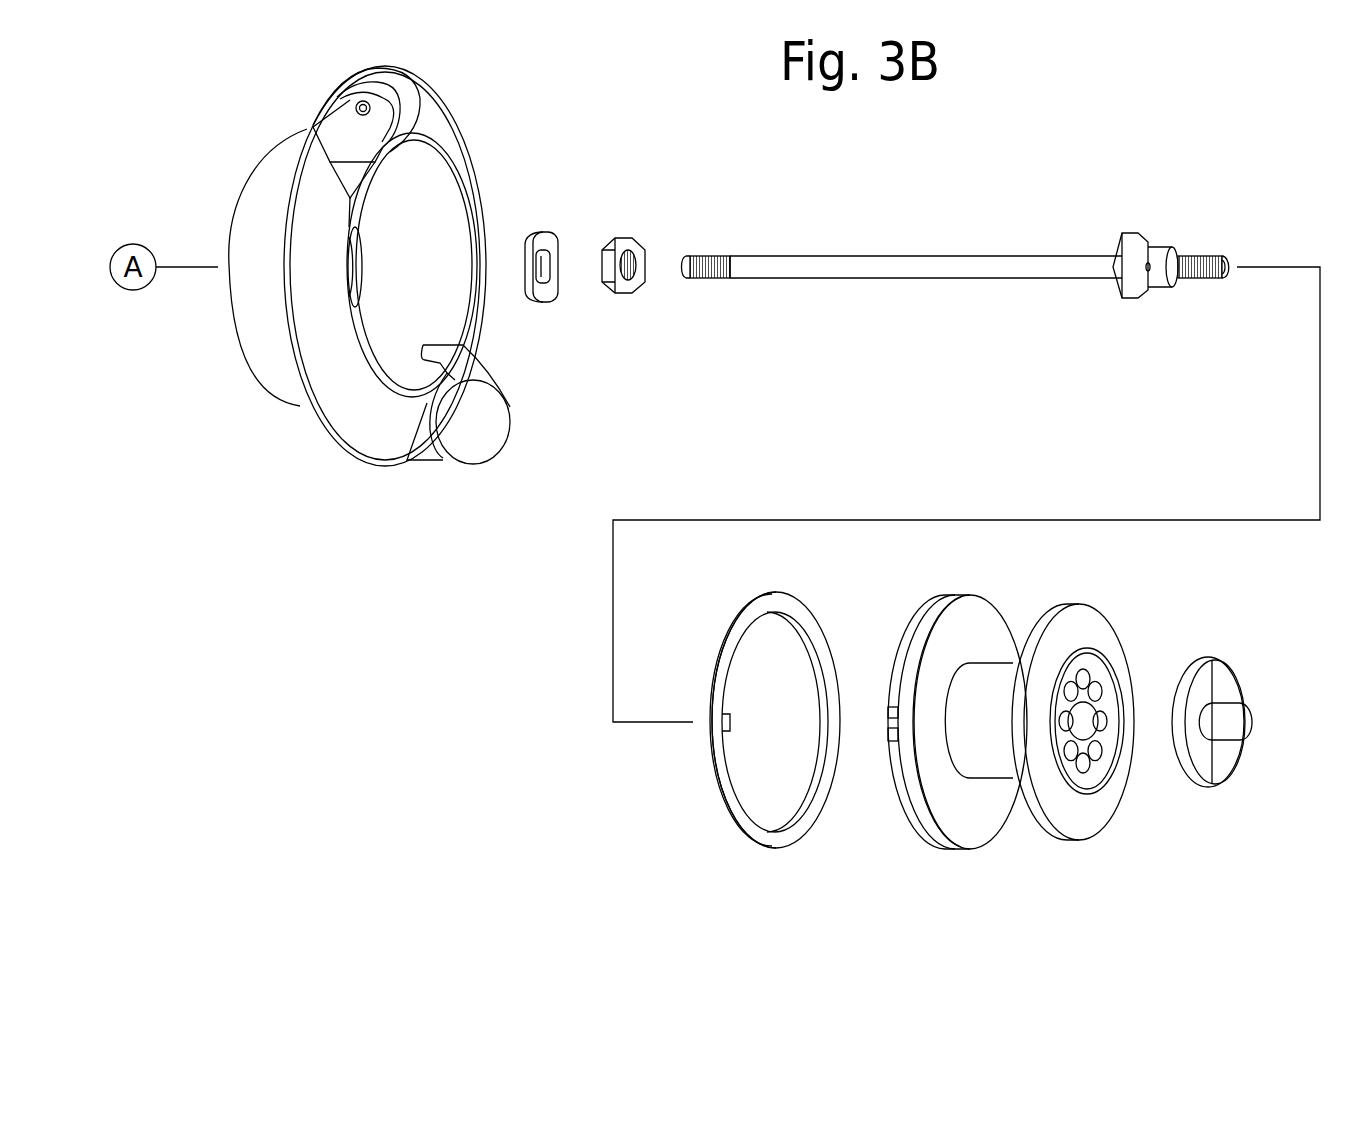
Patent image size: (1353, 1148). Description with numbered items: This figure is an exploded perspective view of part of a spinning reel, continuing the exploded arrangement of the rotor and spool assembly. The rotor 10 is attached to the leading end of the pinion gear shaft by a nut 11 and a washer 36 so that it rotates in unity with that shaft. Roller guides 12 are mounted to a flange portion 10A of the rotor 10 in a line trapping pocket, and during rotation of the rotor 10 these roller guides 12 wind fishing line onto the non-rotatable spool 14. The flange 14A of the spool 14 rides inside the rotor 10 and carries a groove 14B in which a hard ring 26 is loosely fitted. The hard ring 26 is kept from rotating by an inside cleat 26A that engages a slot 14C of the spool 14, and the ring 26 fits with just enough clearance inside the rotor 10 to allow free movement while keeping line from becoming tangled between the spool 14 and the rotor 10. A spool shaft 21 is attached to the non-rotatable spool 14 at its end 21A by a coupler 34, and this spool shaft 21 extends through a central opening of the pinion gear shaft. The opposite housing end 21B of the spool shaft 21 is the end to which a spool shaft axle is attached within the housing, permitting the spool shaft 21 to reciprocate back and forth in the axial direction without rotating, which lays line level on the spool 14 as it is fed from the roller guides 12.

The rotor 10 is at (275, 397).
The flange portion 10A is at (357, 430).
The nut 11 is at (615, 293).
The roller guides 12 is at (417, 103).
The spool 14 is at (986, 758).
The flange 14A is at (937, 790).
The groove 14B is at (890, 736).
The slot 14C is at (890, 718).
The spool shaft 21 is at (958, 272).
The end of spool shaft 21A is at (1202, 257).
The housing end of spool shaft 21B is at (713, 257).
The hard ring 26 is at (775, 766).
The inside cleat 26A is at (732, 722).
The coupler 34 is at (1223, 680).
The washer 36 is at (550, 233).